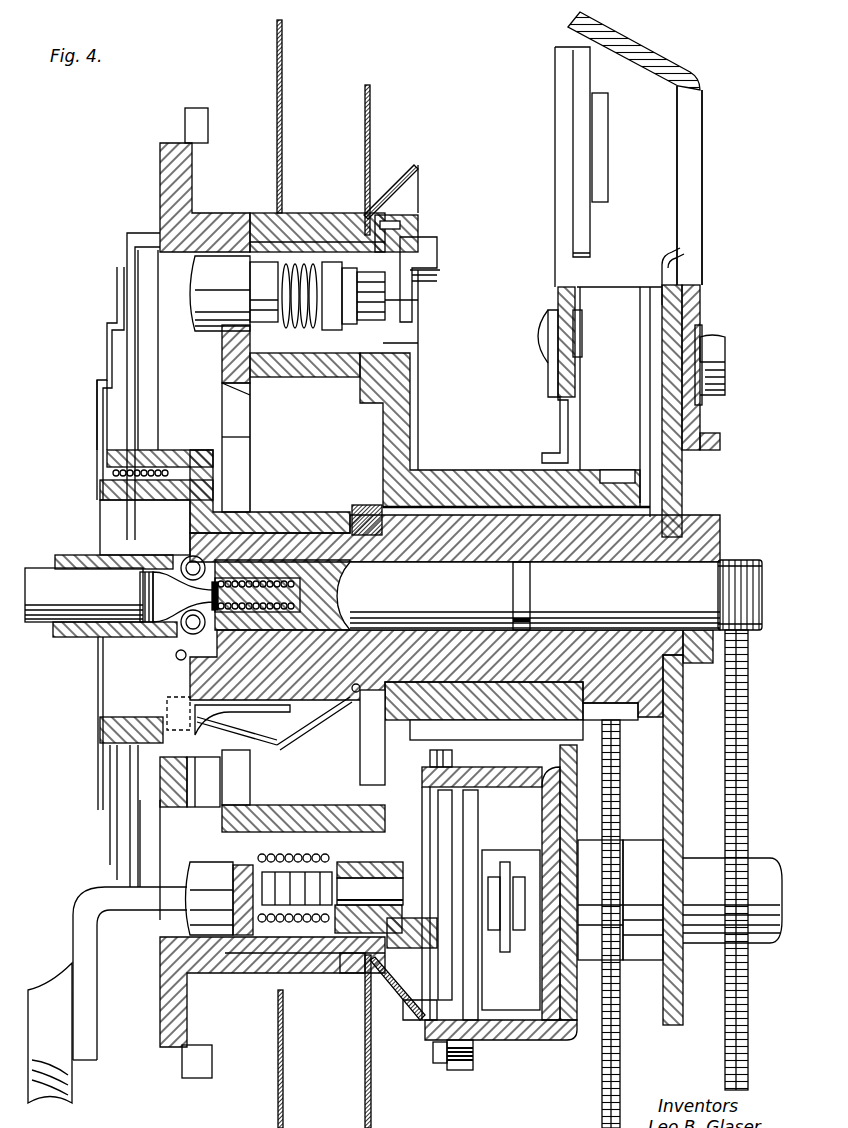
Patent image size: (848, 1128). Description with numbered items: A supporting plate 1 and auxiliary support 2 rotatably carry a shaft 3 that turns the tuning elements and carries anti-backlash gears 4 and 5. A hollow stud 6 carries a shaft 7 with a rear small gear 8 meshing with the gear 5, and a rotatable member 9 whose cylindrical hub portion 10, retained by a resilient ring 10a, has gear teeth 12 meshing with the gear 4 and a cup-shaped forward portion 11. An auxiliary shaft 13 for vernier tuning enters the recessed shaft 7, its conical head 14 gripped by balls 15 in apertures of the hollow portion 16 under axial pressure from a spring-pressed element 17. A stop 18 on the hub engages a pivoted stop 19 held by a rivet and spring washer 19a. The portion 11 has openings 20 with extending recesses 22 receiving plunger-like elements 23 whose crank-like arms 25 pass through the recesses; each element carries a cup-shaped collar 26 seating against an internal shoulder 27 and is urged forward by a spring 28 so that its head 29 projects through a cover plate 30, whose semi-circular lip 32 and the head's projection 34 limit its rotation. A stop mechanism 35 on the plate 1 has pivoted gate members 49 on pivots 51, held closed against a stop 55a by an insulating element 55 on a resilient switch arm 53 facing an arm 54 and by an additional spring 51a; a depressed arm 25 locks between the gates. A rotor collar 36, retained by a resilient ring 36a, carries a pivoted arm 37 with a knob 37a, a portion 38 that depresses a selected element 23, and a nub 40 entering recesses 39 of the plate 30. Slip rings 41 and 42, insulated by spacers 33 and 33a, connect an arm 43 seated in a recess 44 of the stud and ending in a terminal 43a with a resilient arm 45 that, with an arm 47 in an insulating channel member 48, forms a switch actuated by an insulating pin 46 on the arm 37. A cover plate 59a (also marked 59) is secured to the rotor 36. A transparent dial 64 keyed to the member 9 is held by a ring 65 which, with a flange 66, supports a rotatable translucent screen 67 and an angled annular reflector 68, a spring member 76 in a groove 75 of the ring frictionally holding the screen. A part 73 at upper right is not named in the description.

The supporting plate 1 is at (560, 1090).
The auxiliary support 2 is at (683, 805).
The shaft 3 is at (760, 860).
The gear 4 is at (620, 812).
The gear 5 is at (490, 220).
The hollow stud 6 is at (468, 508).
The shaft 7 is at (440, 508).
The small gear 8 is at (742, 562).
The rotatable member 9 is at (410, 423).
The cylindrical hub portion 10 is at (515, 512).
The resilient ring or key 10a is at (395, 700).
The cup-shaped forward portion 11 is at (335, 360).
The gear teeth 12 is at (605, 478).
The auxiliary shaft 13 is at (33, 575).
The conical head 14 is at (110, 640).
The balls 15 is at (180, 572).
The hollow portion 16 is at (182, 566).
The spring-pressed element 17 is at (340, 580).
The stop 18 is at (522, 745).
The stop 19 is at (548, 397).
The rivet and spring washer 19a is at (548, 312).
The openings 20 is at (295, 262).
The extending recess 22 is at (400, 345).
The plunger-like element 23 is at (408, 300).
The crank-like arm 25 is at (437, 258).
The cup-shaped collar 26 is at (330, 862).
The internal shoulder 27 is at (340, 262).
The spring 28 is at (288, 333).
The head 29 is at (202, 328).
The cover plate 30 is at (222, 380).
The semi-circular lip 32 is at (200, 285).
The insulating spacer 33 is at (362, 508).
The insulating spacer 33a is at (340, 510).
The projection 34 is at (205, 262).
The stop mechanism 35 is at (500, 1040).
The collar 36 is at (250, 513).
The resilient ring or key 36a is at (175, 655).
The pivoted arm 37 is at (92, 900).
The knob 37a is at (42, 990).
The portion 38 is at (165, 865).
The recesses 39 is at (250, 430).
The projection or nub 40 is at (190, 792).
The electrically conductive ring 41 is at (314, 723).
The electrically conductive ring 42 is at (358, 692).
The extending arm 43 is at (640, 351).
The terminal portion 43a is at (670, 252).
The longitudinal recess 44 is at (500, 512).
The resilient arm 45 is at (305, 736).
The insulating pin 46 is at (185, 720).
The arm 47 is at (242, 720).
The channel member 48 is at (180, 697).
The gate members 49 is at (443, 890).
The pivots 51 is at (452, 757).
The additional spring 51a is at (473, 1052).
The resilient arm 53 is at (494, 932).
The resilient arm 54 is at (520, 930).
The insulating element 55 is at (505, 862).
The stop 55a is at (478, 1068).
The cover 59 is at (160, 152).
The cover plate 59a is at (100, 405).
The transparent indicating dial member 64 is at (283, 62).
The ring 65 is at (320, 215).
The flange 66 is at (420, 228).
The translucent plate or screen 67 is at (371, 97).
The annular reflector 68 is at (372, 210).
The guard plate 73 is at (660, 62).
The circumferential groove or recess 75 is at (365, 972).
The spring member 76 is at (396, 220).